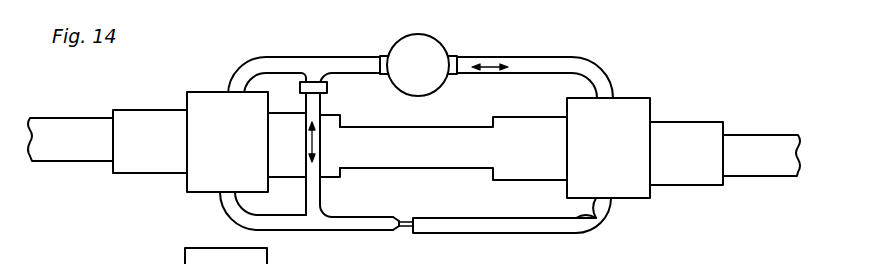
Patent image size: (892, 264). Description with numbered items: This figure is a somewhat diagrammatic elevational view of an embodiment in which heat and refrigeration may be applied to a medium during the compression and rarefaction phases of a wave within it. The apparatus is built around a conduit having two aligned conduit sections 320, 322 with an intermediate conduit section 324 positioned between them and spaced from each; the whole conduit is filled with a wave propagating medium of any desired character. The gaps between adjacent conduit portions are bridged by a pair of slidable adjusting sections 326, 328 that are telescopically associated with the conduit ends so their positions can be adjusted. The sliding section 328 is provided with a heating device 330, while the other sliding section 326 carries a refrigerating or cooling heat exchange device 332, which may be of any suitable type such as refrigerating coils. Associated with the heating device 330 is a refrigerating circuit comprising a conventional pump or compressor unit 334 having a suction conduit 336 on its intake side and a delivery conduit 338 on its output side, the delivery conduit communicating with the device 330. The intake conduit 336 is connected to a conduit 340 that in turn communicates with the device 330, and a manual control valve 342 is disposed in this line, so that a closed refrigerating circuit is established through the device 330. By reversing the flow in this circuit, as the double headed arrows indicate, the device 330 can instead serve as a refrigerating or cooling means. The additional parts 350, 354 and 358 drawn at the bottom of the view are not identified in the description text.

The conduit section 320 is at (50, 155).
The conduit section 322 is at (750, 140).
The intermediate conduit section 324 is at (427, 160).
The slidable adjusting section 326 is at (145, 113).
The slidable adjusting section 328 is at (673, 132).
The heating device 330 is at (630, 107).
The refrigerating or cooling heat exchange device 332 is at (212, 182).
The pump or compressor unit 334 is at (436, 39).
The suction conduit 336 is at (350, 62).
The delivery conduit 338 is at (523, 63).
The conduit 340 is at (537, 231).
The manual control valve 342 is at (327, 87).
The reservoir unit 350 is at (58, 254).
The coupling 354 is at (381, 240).
The tank 358 is at (254, 263).